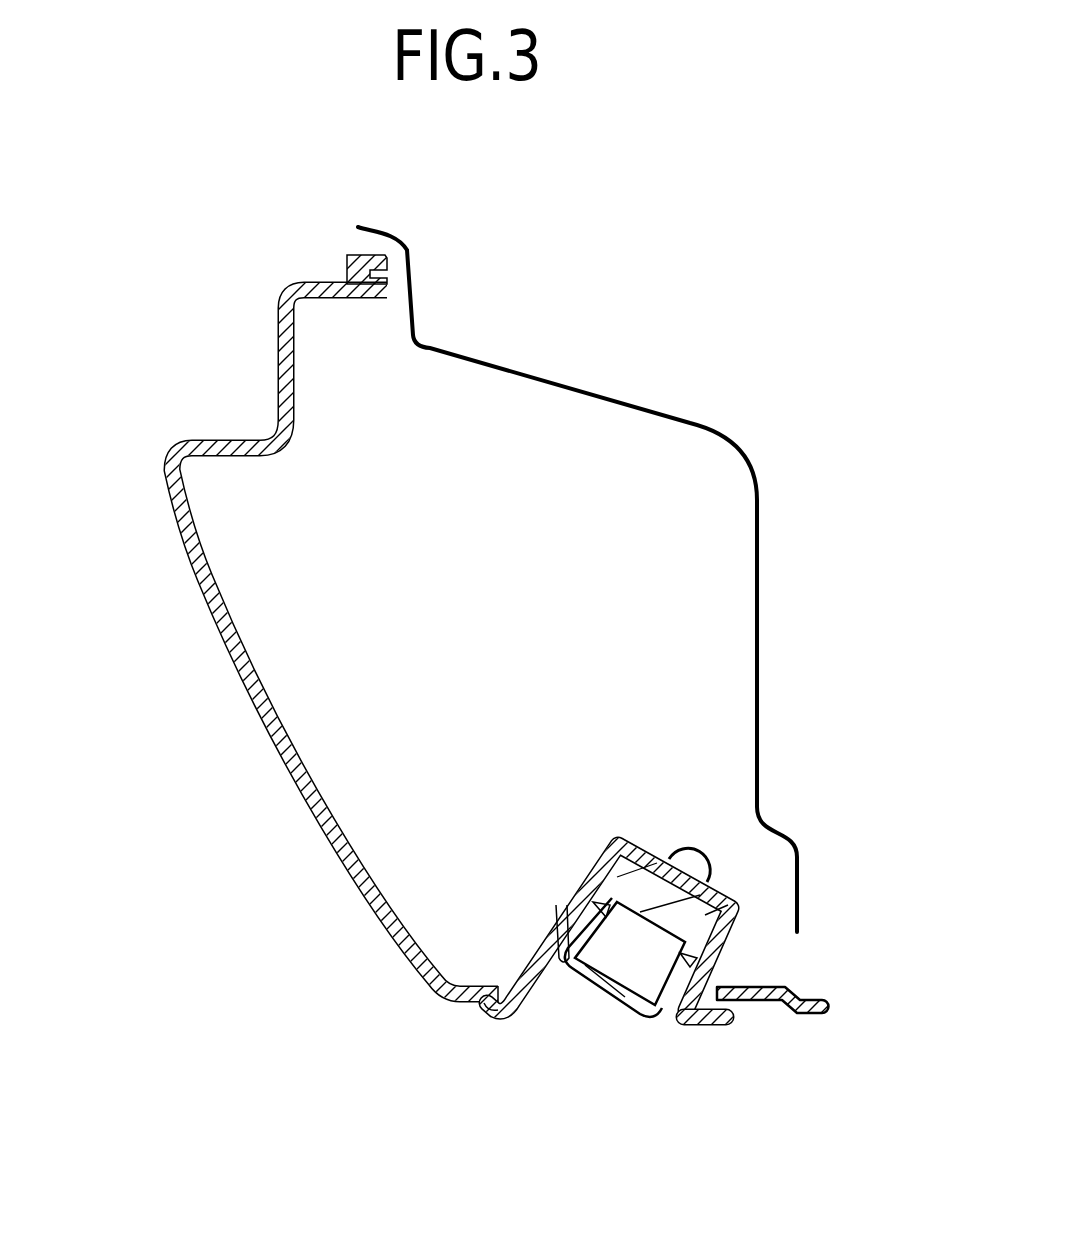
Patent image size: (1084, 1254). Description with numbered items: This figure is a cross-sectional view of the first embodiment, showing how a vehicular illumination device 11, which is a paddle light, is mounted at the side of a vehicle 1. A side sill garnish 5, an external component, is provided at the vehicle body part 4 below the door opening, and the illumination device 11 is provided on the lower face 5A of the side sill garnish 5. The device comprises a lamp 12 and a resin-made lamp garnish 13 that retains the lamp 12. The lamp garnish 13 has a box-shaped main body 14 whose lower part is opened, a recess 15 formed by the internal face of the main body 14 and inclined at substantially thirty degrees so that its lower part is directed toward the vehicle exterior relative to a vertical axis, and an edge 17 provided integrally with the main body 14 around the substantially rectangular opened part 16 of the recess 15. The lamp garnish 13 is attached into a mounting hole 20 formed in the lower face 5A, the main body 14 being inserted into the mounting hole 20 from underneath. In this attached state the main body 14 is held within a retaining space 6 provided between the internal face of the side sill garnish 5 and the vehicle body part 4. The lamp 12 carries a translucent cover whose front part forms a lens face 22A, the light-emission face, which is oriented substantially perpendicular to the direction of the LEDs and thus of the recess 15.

The vehicle 1 is at (205, 280).
The vehicle body part 4 is at (760, 625).
The side sill garnish 5 is at (232, 634).
The lower face 5A is at (768, 1000).
The retaining space 6 is at (468, 559).
The vehicular illumination device 11 is at (652, 1026).
The lamp 12 is at (576, 988).
The lamp garnish 13 is at (750, 900).
The main body 14 is at (618, 843).
The recess 15 is at (558, 905).
The opened part 16 is at (684, 1008).
The edge 17 is at (494, 1018).
The mounting hole 20 is at (492, 983).
The lens face 22A is at (615, 998).